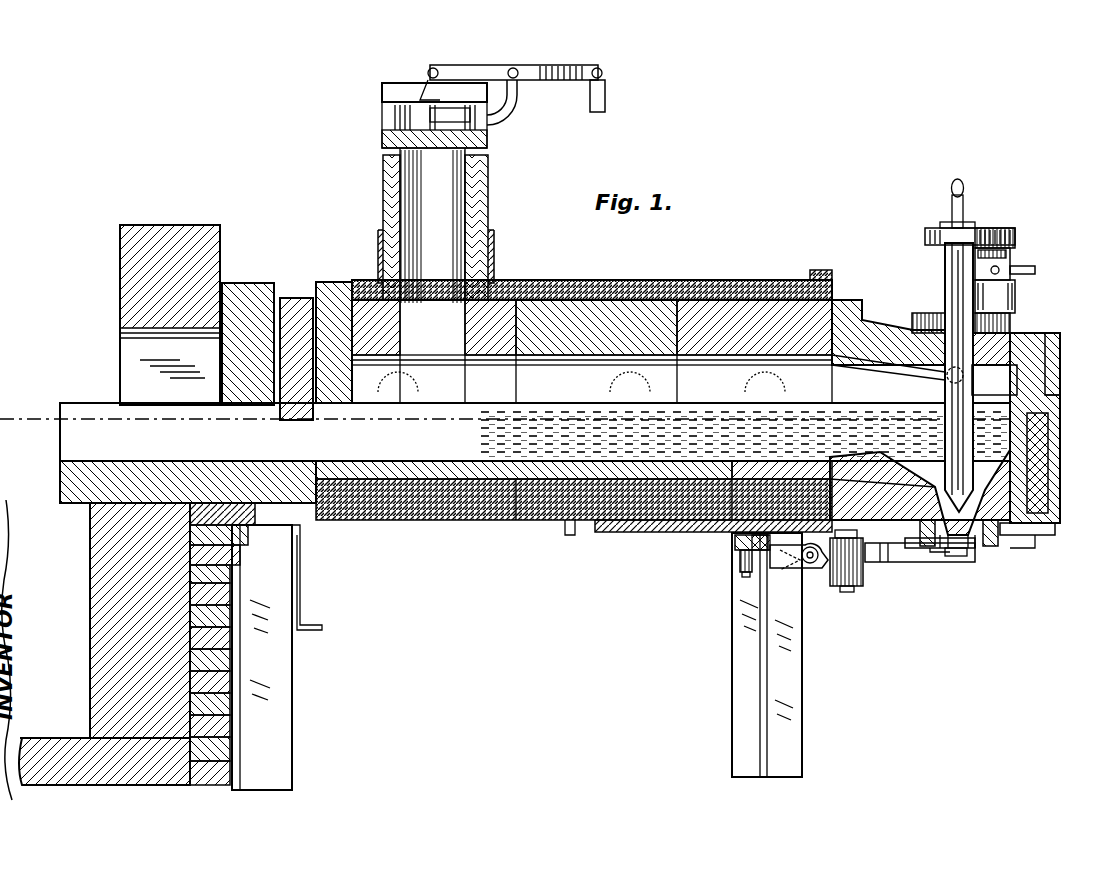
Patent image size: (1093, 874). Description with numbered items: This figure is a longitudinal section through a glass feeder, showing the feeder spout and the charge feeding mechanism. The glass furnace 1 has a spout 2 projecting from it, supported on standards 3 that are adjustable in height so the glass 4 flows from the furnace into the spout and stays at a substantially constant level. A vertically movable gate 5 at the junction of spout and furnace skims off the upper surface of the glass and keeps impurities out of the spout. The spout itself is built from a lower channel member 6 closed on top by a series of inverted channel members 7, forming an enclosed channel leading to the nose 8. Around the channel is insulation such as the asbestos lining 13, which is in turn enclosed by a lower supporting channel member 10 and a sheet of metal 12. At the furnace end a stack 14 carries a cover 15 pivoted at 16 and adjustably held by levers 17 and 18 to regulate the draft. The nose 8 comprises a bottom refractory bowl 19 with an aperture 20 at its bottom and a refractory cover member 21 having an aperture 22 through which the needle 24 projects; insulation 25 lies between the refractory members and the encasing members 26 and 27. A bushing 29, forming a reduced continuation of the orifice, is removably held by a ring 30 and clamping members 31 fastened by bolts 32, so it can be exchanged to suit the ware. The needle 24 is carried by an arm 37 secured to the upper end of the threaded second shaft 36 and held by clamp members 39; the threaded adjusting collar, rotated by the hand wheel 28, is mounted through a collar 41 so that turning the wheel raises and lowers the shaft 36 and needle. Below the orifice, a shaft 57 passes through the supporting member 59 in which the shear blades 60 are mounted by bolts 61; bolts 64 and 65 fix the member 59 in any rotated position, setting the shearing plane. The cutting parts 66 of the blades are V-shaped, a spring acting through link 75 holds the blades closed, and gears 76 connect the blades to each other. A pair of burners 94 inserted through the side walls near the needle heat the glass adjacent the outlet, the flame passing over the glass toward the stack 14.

The glass furnace 1 is at (216, 218).
The spout 2 is at (790, 274).
The standards 3 is at (295, 682).
The glass 4 is at (655, 255).
The vertically movable gate 5 is at (295, 305).
The lower channel member 6 is at (1027, 535).
The inverted channel members 7 is at (495, 305).
The nose 8 is at (1070, 388).
The lower supporting channel member 10 is at (628, 535).
The sheet of metal 12 is at (542, 290).
The asbestos lining 13 is at (725, 300).
The stack 14 is at (478, 136).
The cover 15 is at (395, 85).
The pivot 16 is at (515, 68).
The lever 17 is at (590, 67).
The lever 18 is at (606, 92).
The bottom refractory bowl 19 is at (1030, 533).
The aperture 20 is at (955, 550).
The refractory cover member 21 is at (1025, 345).
The aperture 22 is at (925, 336).
The needle 24 is at (945, 300).
The insulation 25 is at (1040, 548).
The casing member 26 is at (1050, 440).
The casing member 27 is at (1058, 335).
The hand wheel 28 is at (1035, 272).
The bushing 29 is at (975, 550).
The ring 30 is at (988, 548).
The clamping members 31 is at (1002, 556).
The bolts 32 is at (996, 540).
The second shaft 36 is at (1012, 258).
The arm 37 is at (998, 228).
The clamp members 39 is at (965, 200).
The collar 41 is at (1015, 287).
The shaft 57 is at (760, 568).
The supporting member 59 is at (836, 586).
The shear blades 60 is at (850, 568).
The bolts 61 is at (811, 567).
The bolt 64 is at (745, 562).
The bolt 65 is at (742, 558).
The cutting parts 66 is at (960, 558).
The link 75 is at (882, 563).
The gears 76 is at (806, 572).
The burners 94 is at (948, 375).